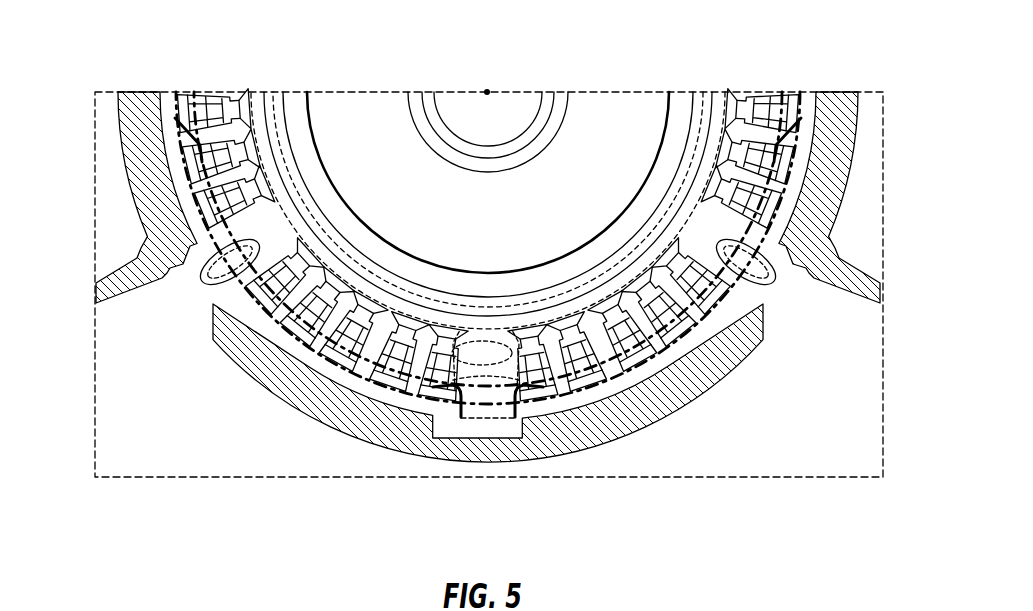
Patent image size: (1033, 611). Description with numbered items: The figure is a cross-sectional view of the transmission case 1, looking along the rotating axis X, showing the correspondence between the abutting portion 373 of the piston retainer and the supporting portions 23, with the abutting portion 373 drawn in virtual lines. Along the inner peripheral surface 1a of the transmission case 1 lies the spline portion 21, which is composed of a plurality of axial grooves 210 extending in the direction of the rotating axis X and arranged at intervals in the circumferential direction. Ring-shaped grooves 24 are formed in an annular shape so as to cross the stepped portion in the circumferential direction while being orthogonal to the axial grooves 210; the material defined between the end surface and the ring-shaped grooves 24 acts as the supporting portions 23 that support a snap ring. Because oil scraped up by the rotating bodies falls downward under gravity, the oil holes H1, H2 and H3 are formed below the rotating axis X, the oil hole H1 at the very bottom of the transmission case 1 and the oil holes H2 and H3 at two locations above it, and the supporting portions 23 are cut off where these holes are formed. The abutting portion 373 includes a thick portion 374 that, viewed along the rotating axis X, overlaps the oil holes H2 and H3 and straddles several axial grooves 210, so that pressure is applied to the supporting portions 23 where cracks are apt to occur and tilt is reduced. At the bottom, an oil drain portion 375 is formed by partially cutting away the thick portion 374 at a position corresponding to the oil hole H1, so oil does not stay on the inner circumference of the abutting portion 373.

The transmission case 1 is at (883, 93).
The inner peripheral surface 1a is at (288, 105).
The spline portion 21 is at (745, 100).
The supporting portions 23 is at (382, 380).
The ring-shaped grooves 24 is at (272, 262).
The axial grooves 210 is at (553, 398).
The abutting portion 373 is at (125, 147).
The thick portion 374 is at (423, 325).
The oil drain portion 375 is at (485, 462).
The oil hole H1 is at (488, 392).
The oil hole H2 is at (203, 270).
The oil hole H3 is at (773, 270).
The rotating axis X is at (487, 71).